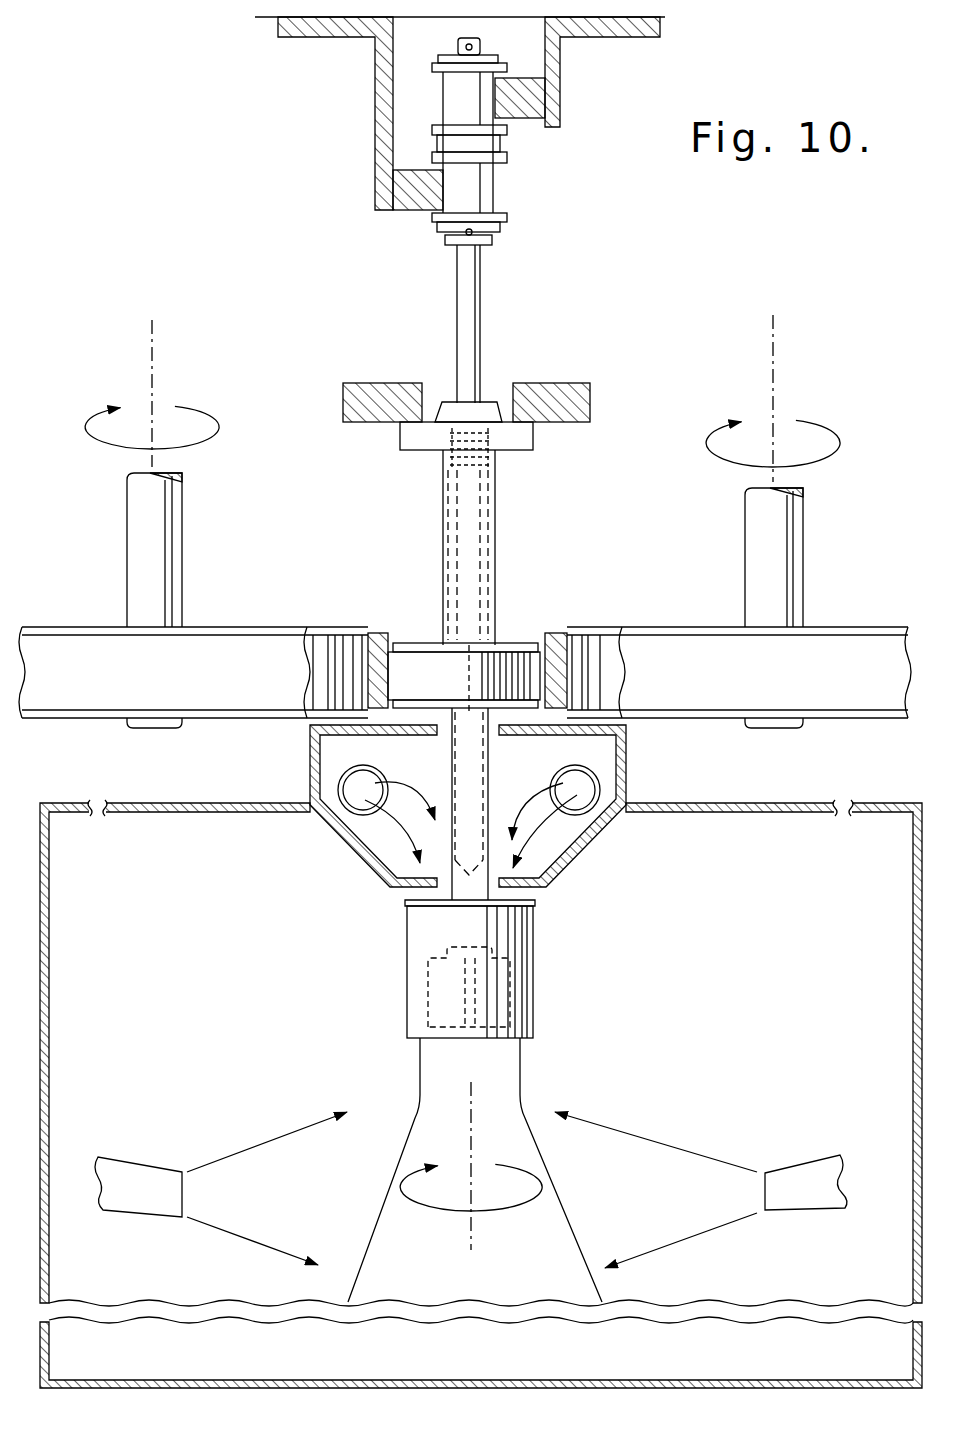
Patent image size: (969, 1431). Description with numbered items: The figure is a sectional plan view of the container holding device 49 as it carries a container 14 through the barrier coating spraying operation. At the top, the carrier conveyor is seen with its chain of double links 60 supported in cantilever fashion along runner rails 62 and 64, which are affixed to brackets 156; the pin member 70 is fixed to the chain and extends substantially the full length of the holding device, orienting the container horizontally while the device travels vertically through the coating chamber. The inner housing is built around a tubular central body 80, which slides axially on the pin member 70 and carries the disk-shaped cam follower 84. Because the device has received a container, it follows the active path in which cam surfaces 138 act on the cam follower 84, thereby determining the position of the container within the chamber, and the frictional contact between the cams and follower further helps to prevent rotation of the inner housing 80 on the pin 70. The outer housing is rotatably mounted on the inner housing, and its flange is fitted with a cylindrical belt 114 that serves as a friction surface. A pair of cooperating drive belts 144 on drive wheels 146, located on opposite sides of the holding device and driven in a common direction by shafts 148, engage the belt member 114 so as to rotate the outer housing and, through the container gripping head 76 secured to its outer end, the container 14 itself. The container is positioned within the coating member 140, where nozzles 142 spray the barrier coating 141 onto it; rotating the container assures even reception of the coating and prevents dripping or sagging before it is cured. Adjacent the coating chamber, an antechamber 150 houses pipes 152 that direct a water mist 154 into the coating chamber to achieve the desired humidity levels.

The brackets 156 is at (375, 112).
The double links 60 is at (452, 100).
The runner rail 62 is at (527, 116).
The runner rail 64 is at (403, 210).
The pin member 70 is at (478, 312).
The cam surfaces 138 is at (375, 383).
The cam follower 84 is at (534, 449).
The tubular central body 80 is at (443, 555).
The container holding device 49 is at (475, 547).
The cylindrical belt 114 is at (533, 650).
The drive belts 144 is at (388, 633).
The drive wheels 146 is at (237, 637).
The shafts 148 is at (183, 513).
The antechamber 150 is at (558, 847).
The pipes 152 is at (348, 806).
The water mist 154 is at (518, 806).
The coating member 140 is at (481, 1094).
The container gripping head 76 is at (534, 955).
The container 14 is at (522, 1068).
The nozzles 142 is at (160, 1180).
The barrier coating 141 is at (248, 1242).